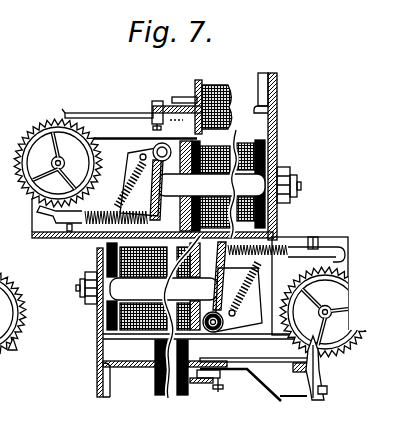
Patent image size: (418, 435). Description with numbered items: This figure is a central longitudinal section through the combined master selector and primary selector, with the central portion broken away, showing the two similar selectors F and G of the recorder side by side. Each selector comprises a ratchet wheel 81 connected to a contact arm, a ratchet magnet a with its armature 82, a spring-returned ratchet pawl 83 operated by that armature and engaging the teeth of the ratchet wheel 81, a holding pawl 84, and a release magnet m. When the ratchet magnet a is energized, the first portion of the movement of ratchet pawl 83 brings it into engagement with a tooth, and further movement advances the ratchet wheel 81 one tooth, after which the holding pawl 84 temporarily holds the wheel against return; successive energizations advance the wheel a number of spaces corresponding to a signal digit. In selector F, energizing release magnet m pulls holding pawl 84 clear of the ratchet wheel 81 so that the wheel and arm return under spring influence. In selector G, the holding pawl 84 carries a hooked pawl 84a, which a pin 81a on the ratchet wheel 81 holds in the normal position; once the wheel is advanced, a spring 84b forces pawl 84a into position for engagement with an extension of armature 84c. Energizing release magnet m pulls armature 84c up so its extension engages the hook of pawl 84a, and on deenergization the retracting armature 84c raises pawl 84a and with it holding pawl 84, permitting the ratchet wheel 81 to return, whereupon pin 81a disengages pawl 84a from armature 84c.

The ratchet wheel 81 is at (64, 121).
The pin 81a is at (334, 334).
The armature 82 is at (142, 155).
The ratchet pawl 83 is at (83, 220).
The holding pawl 84 is at (113, 114).
The pawl 84a is at (326, 401).
The spring 84b is at (326, 390).
The armature 84c is at (278, 399).
The release magnet m is at (222, 90).
The ratchet magnet a is at (228, 143).
The selector F is at (190, 235).
The selector G is at (219, 384).